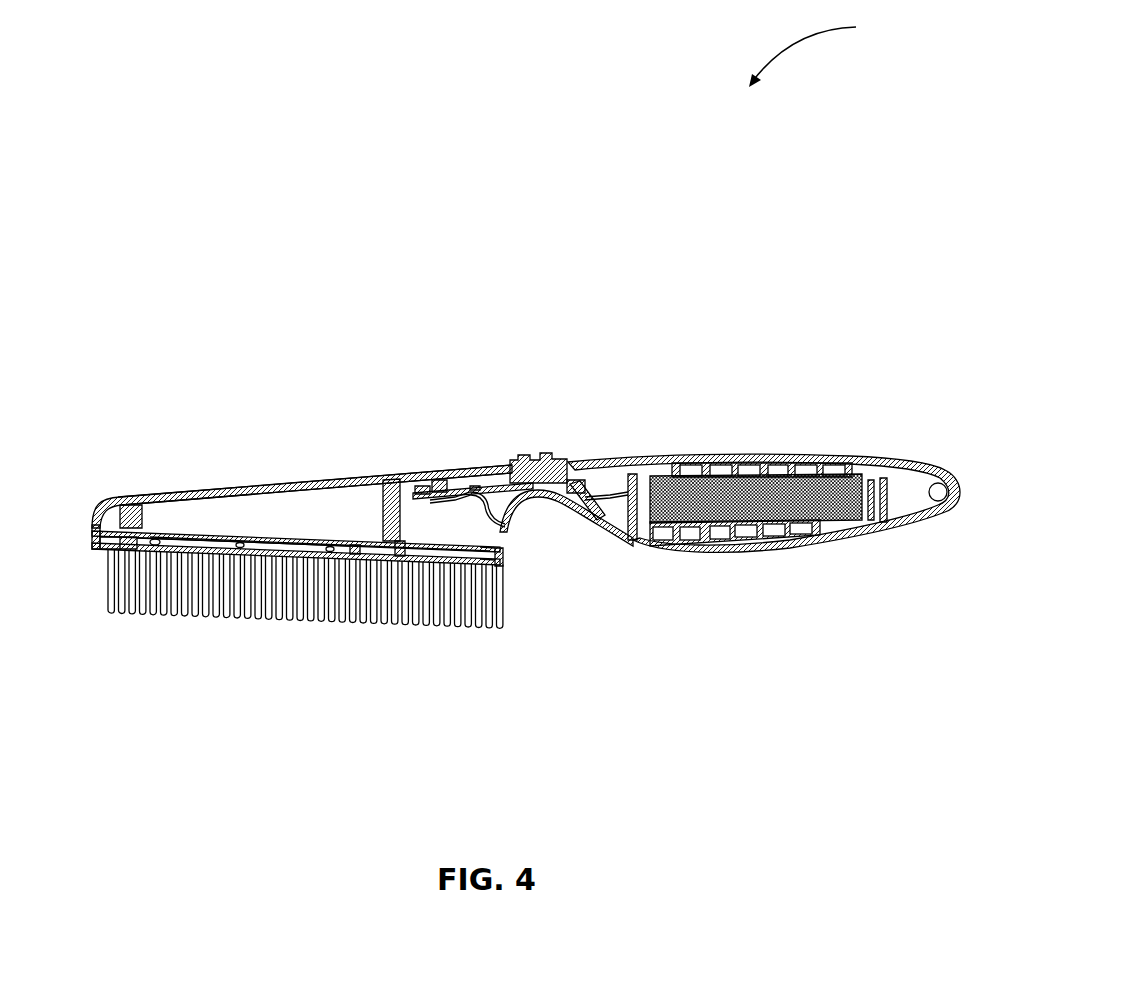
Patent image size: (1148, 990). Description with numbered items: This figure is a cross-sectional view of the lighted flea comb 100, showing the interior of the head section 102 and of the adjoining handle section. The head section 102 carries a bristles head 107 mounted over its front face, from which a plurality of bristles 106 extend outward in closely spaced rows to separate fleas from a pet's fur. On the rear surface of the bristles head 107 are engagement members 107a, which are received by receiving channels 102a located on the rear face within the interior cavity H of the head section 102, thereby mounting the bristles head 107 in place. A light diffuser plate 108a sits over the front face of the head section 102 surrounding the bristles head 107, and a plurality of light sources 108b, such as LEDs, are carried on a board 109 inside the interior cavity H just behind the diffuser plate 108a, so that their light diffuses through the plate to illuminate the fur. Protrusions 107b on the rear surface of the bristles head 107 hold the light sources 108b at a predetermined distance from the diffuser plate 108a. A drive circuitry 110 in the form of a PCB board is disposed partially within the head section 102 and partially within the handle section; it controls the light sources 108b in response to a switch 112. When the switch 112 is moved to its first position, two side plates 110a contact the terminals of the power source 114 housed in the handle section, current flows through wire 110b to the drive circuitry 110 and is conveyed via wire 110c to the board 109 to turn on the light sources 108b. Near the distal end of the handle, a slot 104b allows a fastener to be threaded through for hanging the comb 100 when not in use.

The flea comb 100 is at (825, 52).
The interior cavity H is at (227, 498).
The head section 102 is at (255, 486).
The receiving channels 102a is at (166, 497).
The slot 104b is at (936, 498).
The bristles 106 is at (243, 618).
The bristles head 107 is at (458, 512).
The engagement members 107a is at (125, 498).
The protrusions 107b is at (174, 540).
The light diffuser plate 108a is at (100, 550).
The light sources 108b is at (285, 541).
The board 109 is at (281, 546).
The drive circuitry 110 is at (488, 488).
The side plates 110a is at (856, 530).
The wire 110b is at (585, 527).
The wire 110c is at (502, 533).
The switch 112 is at (556, 457).
The power source 114 is at (731, 480).